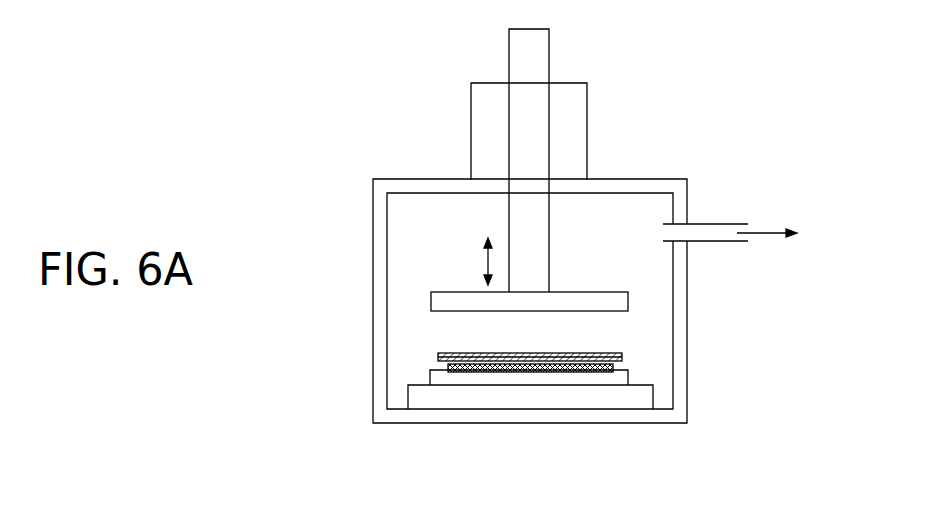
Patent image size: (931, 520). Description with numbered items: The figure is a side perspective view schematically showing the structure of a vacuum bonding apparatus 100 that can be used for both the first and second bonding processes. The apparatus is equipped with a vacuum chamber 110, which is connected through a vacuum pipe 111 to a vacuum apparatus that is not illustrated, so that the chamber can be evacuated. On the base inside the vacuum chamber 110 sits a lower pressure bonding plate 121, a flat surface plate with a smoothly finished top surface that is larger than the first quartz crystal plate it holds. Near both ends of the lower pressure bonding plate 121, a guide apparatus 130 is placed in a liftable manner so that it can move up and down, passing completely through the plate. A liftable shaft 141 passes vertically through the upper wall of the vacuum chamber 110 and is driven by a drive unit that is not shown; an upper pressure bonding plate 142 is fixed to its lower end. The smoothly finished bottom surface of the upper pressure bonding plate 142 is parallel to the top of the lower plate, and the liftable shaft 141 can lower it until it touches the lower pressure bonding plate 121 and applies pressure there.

The vacuum bonding apparatus 100 is at (388, 81).
The vacuum chamber 110 is at (688, 322).
The vacuum pipe 111 is at (713, 230).
The lower pressure bonding plate 121 is at (629, 377).
The guide apparatus 130 is at (410, 368).
The liftable shaft 141 is at (550, 49).
The upper pressure bonding plate 142 is at (592, 291).